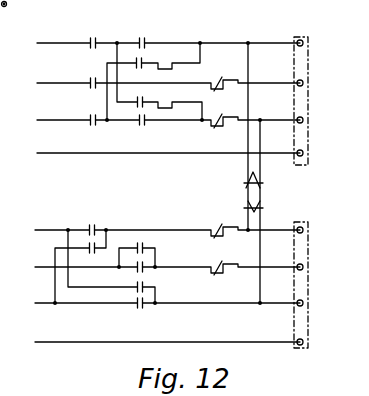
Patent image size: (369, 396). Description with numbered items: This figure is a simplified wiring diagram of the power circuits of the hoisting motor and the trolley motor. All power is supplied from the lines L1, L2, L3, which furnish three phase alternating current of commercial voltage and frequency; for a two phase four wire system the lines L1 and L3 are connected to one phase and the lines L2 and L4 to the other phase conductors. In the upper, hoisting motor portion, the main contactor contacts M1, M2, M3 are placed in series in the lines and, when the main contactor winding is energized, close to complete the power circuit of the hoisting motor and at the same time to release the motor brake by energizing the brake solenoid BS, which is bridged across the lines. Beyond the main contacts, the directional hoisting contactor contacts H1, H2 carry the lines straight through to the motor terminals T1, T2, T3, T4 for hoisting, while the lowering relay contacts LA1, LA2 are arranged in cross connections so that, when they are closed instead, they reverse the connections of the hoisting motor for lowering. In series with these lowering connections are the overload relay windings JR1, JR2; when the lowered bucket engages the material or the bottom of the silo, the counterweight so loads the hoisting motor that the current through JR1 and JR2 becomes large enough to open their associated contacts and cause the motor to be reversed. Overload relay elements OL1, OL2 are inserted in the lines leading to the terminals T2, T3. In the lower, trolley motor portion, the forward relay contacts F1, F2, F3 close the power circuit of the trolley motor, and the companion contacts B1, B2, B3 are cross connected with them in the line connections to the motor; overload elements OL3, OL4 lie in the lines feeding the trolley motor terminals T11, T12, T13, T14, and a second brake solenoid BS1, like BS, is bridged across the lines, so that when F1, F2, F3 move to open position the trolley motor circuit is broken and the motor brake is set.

The supply line L1 is at (166, 132).
The supply line L2 is at (165, 172).
The supply line L3 is at (165, 206).
The supply line L4 is at (165, 242).
The main contactor contact M1 is at (95, 38).
The main contactor contact M2 is at (95, 79).
The main contactor contact M3 is at (95, 116).
The directional hoisting motor contactor contact H1 is at (146, 38).
The directional hoisting motor contactor contact H2 is at (143, 122).
The overload relay winding JR1 is at (153, 81).
The overload relay winding JR2 is at (159, 81).
The lowering relay contact LA1 is at (136, 69).
The lowering relay contact LA2 is at (141, 99).
The overload relay OL' OL1 is at (225, 78).
The overload relay OL2 is at (225, 115).
The overload relay OL3 is at (223, 225).
The overload relay OL4 is at (231, 262).
The brake solenoid BS is at (267, 184).
The switch BS' BS1 is at (268, 208).
The terminal T1 is at (312, 44).
The terminal T2 is at (312, 83).
The terminal T3 is at (312, 121).
The terminal T4 is at (312, 154).
The terminal T11 is at (316, 231).
The terminal T12 is at (316, 268).
The terminal T13 is at (316, 303).
The terminal T14 is at (316, 343).
The forward relay contact F1 is at (96, 227).
The forward relay contact F2 is at (139, 308).
The forward relay contact F3 is at (144, 246).
The backward contact B' B1 is at (133, 289).
The backward contact B2 is at (87, 252).
The backward contact B3 is at (145, 270).